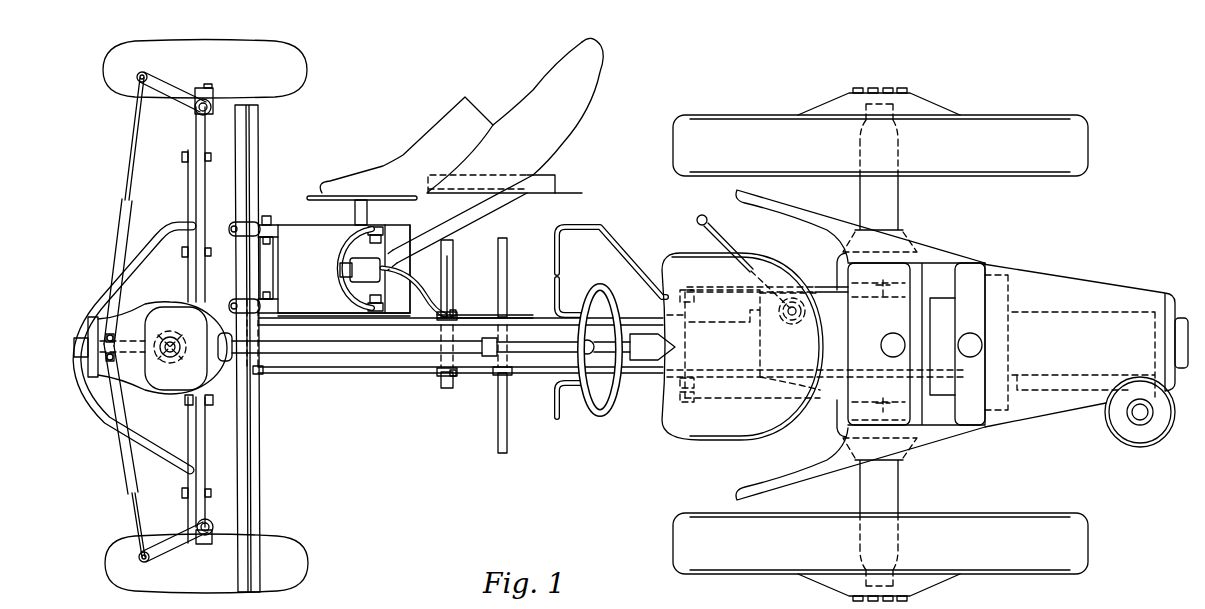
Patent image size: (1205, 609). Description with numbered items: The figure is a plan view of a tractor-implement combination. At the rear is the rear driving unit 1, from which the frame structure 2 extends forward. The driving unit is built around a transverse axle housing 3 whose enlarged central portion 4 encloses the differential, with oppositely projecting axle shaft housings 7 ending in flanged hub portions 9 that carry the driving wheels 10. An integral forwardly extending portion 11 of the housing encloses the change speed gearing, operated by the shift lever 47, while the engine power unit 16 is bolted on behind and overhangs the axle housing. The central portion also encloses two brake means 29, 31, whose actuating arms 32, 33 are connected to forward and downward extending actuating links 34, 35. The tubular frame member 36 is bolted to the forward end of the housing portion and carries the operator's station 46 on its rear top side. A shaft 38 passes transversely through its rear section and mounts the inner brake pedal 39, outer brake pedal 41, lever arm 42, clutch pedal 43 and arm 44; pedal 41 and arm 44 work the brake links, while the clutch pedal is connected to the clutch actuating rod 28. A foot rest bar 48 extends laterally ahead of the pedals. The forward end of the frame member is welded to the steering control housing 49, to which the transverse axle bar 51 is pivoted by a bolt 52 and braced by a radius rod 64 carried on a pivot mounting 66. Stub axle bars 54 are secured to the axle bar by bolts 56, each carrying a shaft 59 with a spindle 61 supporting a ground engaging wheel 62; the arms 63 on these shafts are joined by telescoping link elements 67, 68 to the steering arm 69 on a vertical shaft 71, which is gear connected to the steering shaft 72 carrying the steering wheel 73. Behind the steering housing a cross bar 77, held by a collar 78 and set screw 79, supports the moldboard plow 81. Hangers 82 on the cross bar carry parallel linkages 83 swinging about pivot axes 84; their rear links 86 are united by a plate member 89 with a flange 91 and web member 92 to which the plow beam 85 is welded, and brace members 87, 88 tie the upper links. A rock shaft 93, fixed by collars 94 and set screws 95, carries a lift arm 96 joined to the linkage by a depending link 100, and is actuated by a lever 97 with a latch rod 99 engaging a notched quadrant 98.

The rear driving unit 1 is at (1085, 346).
The frame structure 2 is at (460, 366).
The axle housing 3 is at (908, 345).
The central portion 4 is at (921, 300).
The axle shaft housing 7 is at (905, 214).
The flanged hub portion 9 is at (848, 95).
The driving wheel 10 is at (880, 344).
The forwardly extending portion 11 is at (825, 400).
The engine power unit 16 is at (1072, 316).
The actuating rod 28 is at (798, 378).
The brake means 29 is at (878, 259).
The brake means 31 is at (882, 428).
The actuating arm 32 is at (884, 292).
The actuating arm 33 is at (882, 400).
The actuating link 34 is at (814, 287).
The actuating link 35 is at (742, 400).
The tubular frame member 36 is at (349, 372).
The shaft 38 is at (694, 342).
The brake pedal 39 is at (554, 293).
The brake pedal 41 is at (553, 248).
The lever arm 42 is at (700, 383).
The clutch pedal 43 is at (553, 402).
The arm 44 is at (684, 394).
The operator's station 46 is at (680, 252).
The shift lever 47 is at (725, 235).
The foot rest bar 48 is at (497, 430).
The steering control housing 49 is at (162, 348).
The axle bar 51 is at (187, 278).
The bolt 52 is at (170, 364).
The stub axle bar 54 is at (205, 142).
The bolt 56 is at (181, 158).
The shaft 59 is at (196, 117).
The spindle 61 is at (208, 86).
The ground engaging wheel 62 is at (260, 46).
The arm 63 is at (185, 108).
The radius rod 64 is at (108, 413).
The pivot mounting 66 is at (84, 348).
The link element 67 is at (124, 460).
The link element 68 is at (130, 511).
The steering arm 69 is at (120, 360).
The shaft 71 is at (170, 336).
The steering shaft 72 is at (556, 343).
The steering wheel 73 is at (598, 418).
The cross bar 77 is at (261, 436).
The collar 78 is at (264, 373).
The set screw 79 is at (259, 367).
The moldboard plow 81 is at (461, 115).
The hanger 82 is at (231, 223).
The parallel linkage 83 is at (344, 269).
The pivot axis 84 is at (268, 216).
The plow beam 85 is at (498, 208).
The rear link 86 is at (384, 228).
The brace member 87 is at (280, 288).
The brace member 88 is at (337, 262).
The plate member 89 is at (384, 318).
The flange 91 is at (409, 265).
The web member 92 is at (430, 232).
The rock shaft 93 is at (454, 386).
The collar 94 is at (438, 322).
The set screw 95 is at (455, 318).
The lift arm 96 is at (414, 298).
The lever 97 is at (454, 254).
The notched quadrant 98 is at (482, 316).
The latch rod 99 is at (450, 277).
The depending link 100 is at (352, 279).